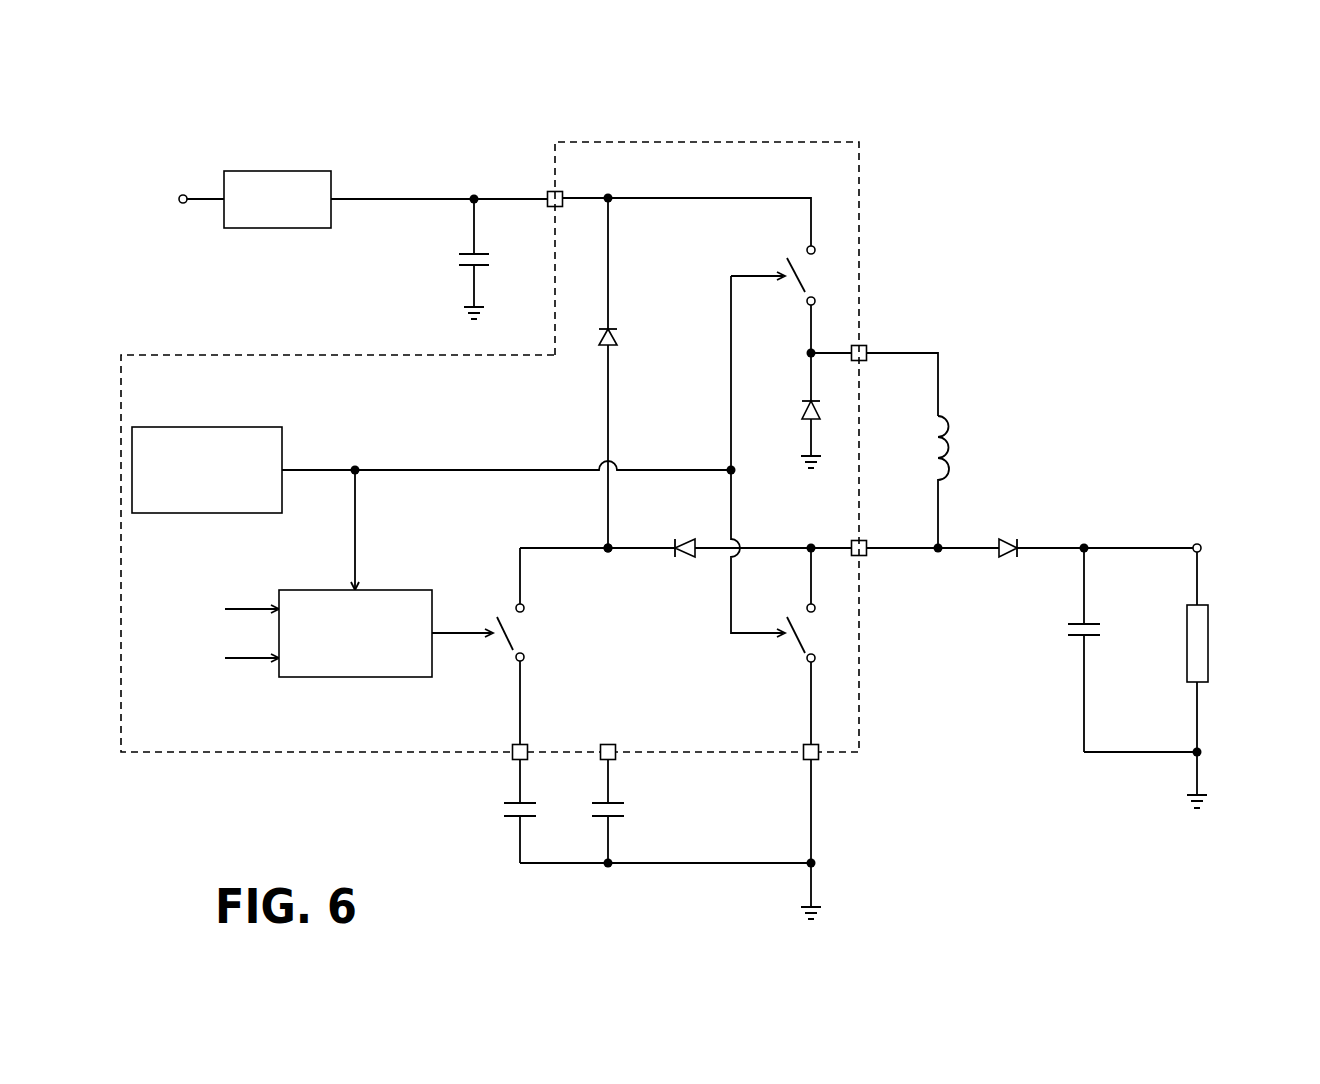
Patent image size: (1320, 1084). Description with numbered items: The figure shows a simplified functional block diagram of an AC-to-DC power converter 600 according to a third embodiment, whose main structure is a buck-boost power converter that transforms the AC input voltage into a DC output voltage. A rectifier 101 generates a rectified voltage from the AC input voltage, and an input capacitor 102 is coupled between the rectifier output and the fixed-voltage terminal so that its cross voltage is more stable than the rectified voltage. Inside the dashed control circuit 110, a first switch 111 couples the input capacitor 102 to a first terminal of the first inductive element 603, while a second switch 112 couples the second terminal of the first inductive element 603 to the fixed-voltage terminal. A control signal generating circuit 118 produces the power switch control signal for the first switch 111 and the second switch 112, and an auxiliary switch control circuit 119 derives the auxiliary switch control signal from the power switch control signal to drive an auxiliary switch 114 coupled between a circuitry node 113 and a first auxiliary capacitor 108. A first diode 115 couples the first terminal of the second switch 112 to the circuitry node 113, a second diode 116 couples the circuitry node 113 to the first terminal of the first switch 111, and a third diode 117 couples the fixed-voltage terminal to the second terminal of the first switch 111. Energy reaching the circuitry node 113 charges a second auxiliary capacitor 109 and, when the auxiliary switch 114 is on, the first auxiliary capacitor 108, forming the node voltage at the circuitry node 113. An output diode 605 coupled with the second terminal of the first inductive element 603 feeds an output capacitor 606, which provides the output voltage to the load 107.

The AC-to-DC power converter 600 is at (1202, 181).
The rectifier 101 is at (277, 171).
The input capacitor 102 is at (457, 261).
The control circuit 110 is at (273, 355).
The second diode 116 is at (617, 335).
The first switch 111 is at (817, 276).
The third diode 117 is at (802, 410).
The first inductive element 603 is at (955, 448).
The output diode 605 is at (1008, 537).
The control signal generating circuit 118 is at (207, 427).
The auxiliary switch control circuit 119 is at (355, 677).
The circuitry node 113 is at (607, 545).
The auxiliary switch 114 is at (527, 633).
The first diode 115 is at (683, 559).
The second switch 112 is at (817, 633).
The first auxiliary capacitor 108 is at (510, 809).
The second auxiliary capacitor 109 is at (622, 810).
The output capacitor 606 is at (1093, 630).
The load 107 is at (1208, 643).